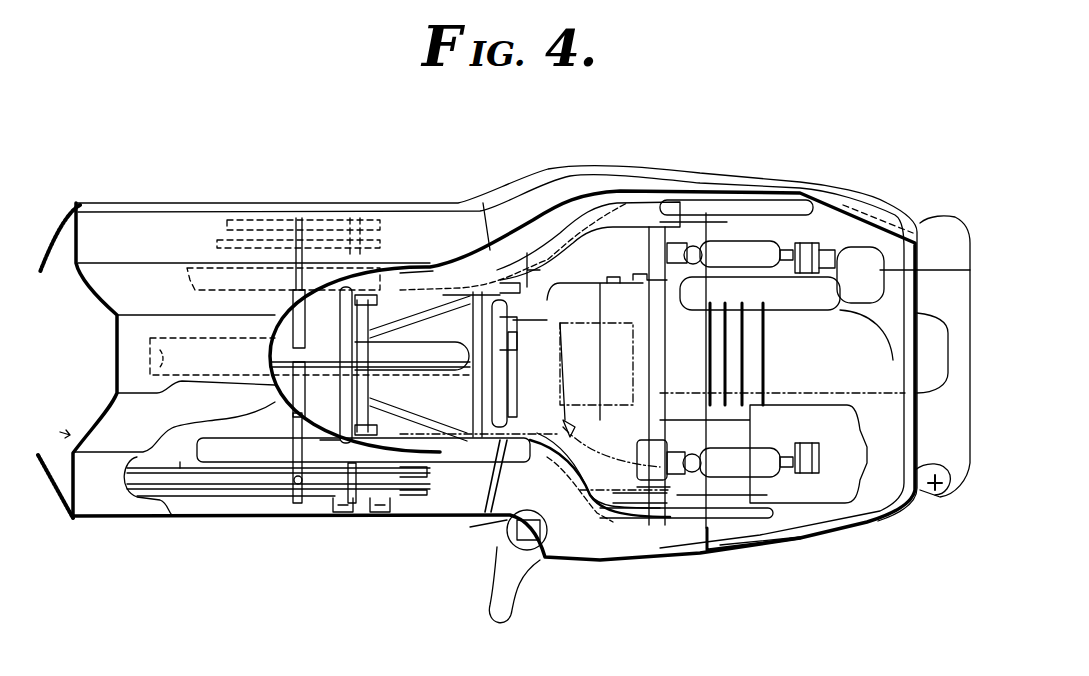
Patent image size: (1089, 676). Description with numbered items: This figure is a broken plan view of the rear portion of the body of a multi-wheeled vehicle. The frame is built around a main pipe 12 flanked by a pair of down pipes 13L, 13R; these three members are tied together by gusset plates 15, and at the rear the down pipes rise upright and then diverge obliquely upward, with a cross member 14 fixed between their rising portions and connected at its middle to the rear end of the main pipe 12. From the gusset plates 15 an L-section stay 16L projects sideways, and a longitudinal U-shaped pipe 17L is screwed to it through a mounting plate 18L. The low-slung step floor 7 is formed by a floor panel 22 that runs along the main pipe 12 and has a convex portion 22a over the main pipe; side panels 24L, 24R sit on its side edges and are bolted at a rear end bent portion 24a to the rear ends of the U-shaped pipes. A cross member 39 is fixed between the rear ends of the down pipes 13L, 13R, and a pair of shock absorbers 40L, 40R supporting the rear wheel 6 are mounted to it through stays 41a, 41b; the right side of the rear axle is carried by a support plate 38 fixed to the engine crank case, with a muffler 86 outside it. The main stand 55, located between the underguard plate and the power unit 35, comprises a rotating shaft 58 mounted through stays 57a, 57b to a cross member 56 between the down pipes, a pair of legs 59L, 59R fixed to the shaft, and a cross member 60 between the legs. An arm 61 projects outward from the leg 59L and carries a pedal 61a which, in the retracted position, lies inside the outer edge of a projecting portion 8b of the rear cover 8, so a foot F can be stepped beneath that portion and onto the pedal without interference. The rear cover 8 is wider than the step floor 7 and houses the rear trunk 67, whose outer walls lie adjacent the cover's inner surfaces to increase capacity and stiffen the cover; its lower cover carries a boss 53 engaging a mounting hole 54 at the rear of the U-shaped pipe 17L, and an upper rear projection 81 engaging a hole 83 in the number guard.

The step floor 7 is at (169, 202).
The side panel 24R is at (72, 207).
The side panel 24L is at (58, 512).
The floor panel 22 is at (231, 389).
The convex portion 22a is at (117, 353).
The main pipe 12 is at (153, 338).
The down pipe 13R is at (205, 265).
The down pipe 13L is at (270, 462).
The gusset plates 15 is at (290, 315).
The cross member 56 is at (342, 329).
The rotating shaft 58 is at (342, 404).
The leg 59R is at (395, 345).
The leg 59L is at (420, 415).
The cross member 14 is at (462, 336).
The cross member 60 is at (518, 404).
The main stand 55 is at (436, 279).
The stay 57b is at (385, 270).
The stay 57a is at (425, 477).
The stay 16L is at (295, 436).
The longitudinal U-shaped pipe 17L is at (205, 498).
The mounting plate 18L is at (298, 505).
The rear end bent portion 24a is at (352, 505).
The boss 53 is at (345, 512).
The mounting hole 54 is at (385, 512).
The arm 61 is at (484, 512).
The pedal 61a is at (542, 545).
The projecting portion 8b is at (545, 560).
The foot F is at (495, 585).
The cross member 39 is at (648, 427).
The stay 41b is at (680, 241).
The stay 41a is at (668, 482).
The shock absorber 40R is at (740, 247).
The shock absorber 40L is at (747, 505).
The muffler 86 is at (857, 250).
The support plate 38 is at (970, 270).
The rear wheel 6 is at (950, 335).
The upper rear projection 81 is at (940, 470).
The hole 83 is at (948, 492).
The rear cover 8 is at (893, 520).
The power unit 35 is at (857, 525).
The rear trunk 67 is at (808, 540).